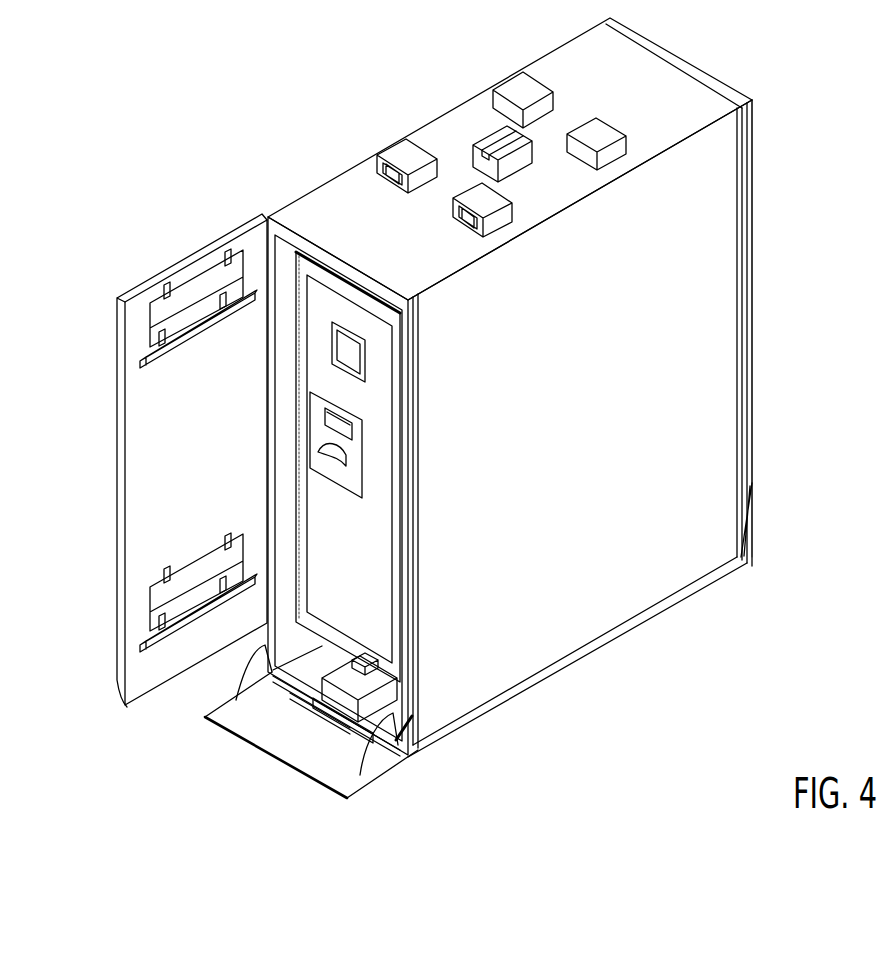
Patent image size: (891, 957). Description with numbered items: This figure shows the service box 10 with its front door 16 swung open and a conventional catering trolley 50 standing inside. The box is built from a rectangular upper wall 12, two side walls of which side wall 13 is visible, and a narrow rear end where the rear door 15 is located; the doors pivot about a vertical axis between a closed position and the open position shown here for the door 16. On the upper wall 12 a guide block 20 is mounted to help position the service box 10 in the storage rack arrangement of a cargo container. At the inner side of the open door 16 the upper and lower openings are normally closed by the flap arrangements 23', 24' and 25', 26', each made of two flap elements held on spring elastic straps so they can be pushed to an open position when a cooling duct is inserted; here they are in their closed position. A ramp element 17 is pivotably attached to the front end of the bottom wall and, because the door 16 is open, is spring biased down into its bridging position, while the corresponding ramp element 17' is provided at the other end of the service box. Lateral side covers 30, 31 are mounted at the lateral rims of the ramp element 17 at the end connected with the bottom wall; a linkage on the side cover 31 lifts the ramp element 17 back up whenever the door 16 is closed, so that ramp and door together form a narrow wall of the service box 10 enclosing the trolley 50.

The service box 10 is at (820, 237).
The upper wall 12 is at (710, 100).
The side wall 13 is at (720, 440).
The rear door 15 is at (752, 388).
The door 16 is at (150, 433).
The ramp element 17 is at (311, 738).
The ramp element 17' is at (776, 520).
The guide block 20 is at (487, 141).
The flap arrangement 23' is at (180, 279).
The flap arrangement 24' is at (157, 329).
The flap arrangement 25' is at (150, 582).
The flap arrangement 26' is at (157, 613).
The lateral side cover 30 is at (253, 677).
The lateral side cover 31 is at (386, 745).
The trolley 50 is at (383, 628).